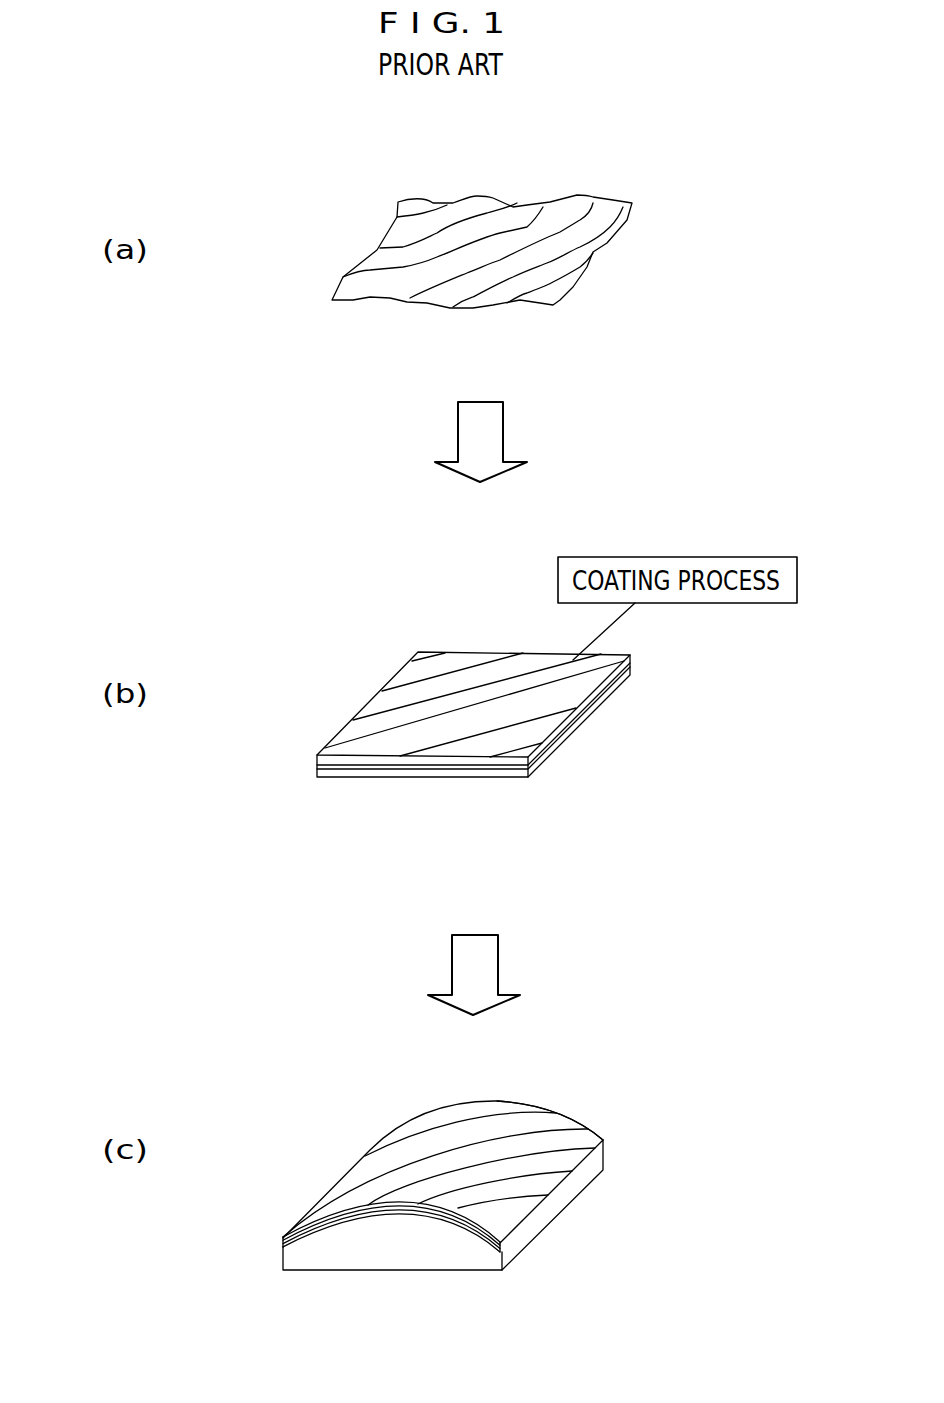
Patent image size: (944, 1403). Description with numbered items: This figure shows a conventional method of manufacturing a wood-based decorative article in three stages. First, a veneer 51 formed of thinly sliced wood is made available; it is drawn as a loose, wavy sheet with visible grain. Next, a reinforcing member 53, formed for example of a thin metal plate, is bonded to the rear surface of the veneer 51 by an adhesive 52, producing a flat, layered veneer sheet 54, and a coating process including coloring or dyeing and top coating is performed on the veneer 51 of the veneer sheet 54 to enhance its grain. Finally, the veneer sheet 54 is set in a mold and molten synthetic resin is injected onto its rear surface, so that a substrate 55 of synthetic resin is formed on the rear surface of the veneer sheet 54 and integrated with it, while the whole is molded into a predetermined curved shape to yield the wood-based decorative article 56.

The veneer 51 is at (385, 260).
The adhesive 52 is at (342, 768).
The reinforcing member 53 is at (402, 772).
The veneer sheet 54 is at (355, 666).
The substrate 55 is at (397, 1262).
The wood-based decorative article 56 is at (603, 1100).